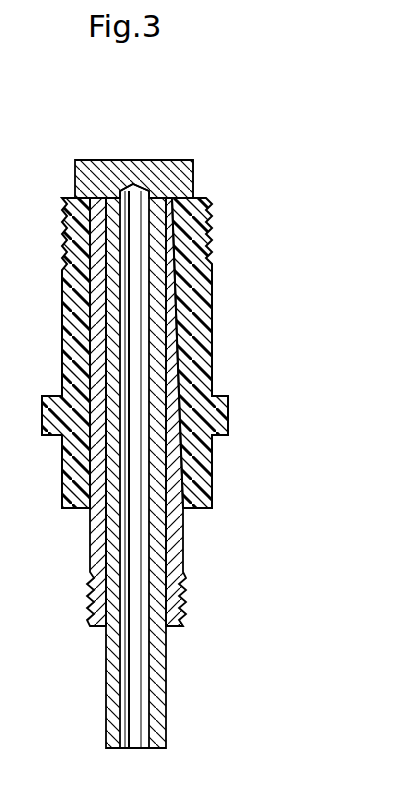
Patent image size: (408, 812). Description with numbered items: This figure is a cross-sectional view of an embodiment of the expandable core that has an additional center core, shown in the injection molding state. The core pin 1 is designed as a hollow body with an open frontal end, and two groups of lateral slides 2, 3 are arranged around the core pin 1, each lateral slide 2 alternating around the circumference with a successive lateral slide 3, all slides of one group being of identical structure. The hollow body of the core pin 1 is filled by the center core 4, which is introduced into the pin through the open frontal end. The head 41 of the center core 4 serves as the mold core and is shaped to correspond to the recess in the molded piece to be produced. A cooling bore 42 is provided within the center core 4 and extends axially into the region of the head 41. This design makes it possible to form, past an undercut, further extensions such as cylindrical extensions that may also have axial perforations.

The core pin 1 is at (106, 545).
The lateral slides 2 is at (66, 324).
The lateral slides 3 is at (214, 323).
The center core 4 is at (88, 176).
The head 41 is at (178, 178).
The cooling bore 42 is at (140, 688).